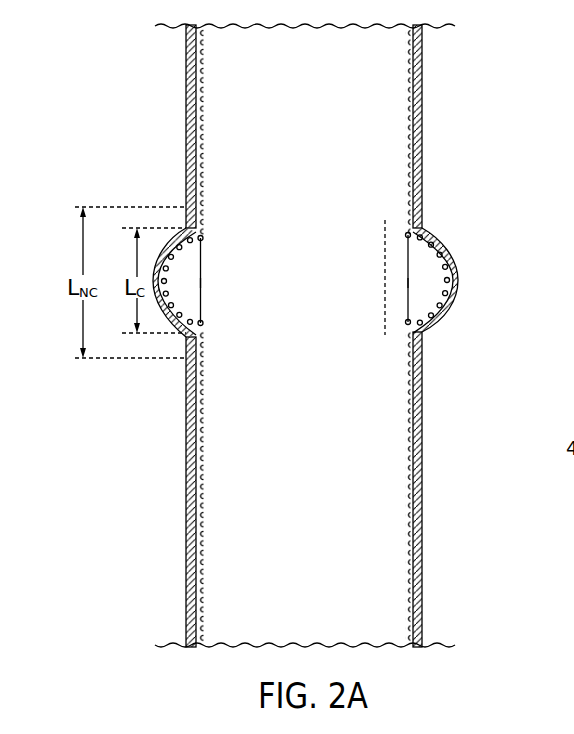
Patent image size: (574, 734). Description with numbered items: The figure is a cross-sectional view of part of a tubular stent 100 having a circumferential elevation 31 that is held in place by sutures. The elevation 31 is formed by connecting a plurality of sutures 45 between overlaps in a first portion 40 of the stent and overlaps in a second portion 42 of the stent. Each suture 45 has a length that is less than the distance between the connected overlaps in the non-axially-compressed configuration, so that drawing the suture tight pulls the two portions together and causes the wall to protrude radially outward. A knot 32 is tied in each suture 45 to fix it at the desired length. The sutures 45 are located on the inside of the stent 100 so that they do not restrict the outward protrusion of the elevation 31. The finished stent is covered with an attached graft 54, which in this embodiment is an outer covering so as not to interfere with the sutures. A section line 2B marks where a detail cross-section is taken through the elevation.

The stent 100 is at (204, 71).
The first portion of the stent 40 is at (434, 90).
The second portion of the stent 42 is at (434, 522).
The graft 54 is at (187, 573).
The suture 45 is at (203, 258).
The knot 32 is at (208, 283).
The elevation 31 is at (474, 284).
The section line 2B is at (430, 335).